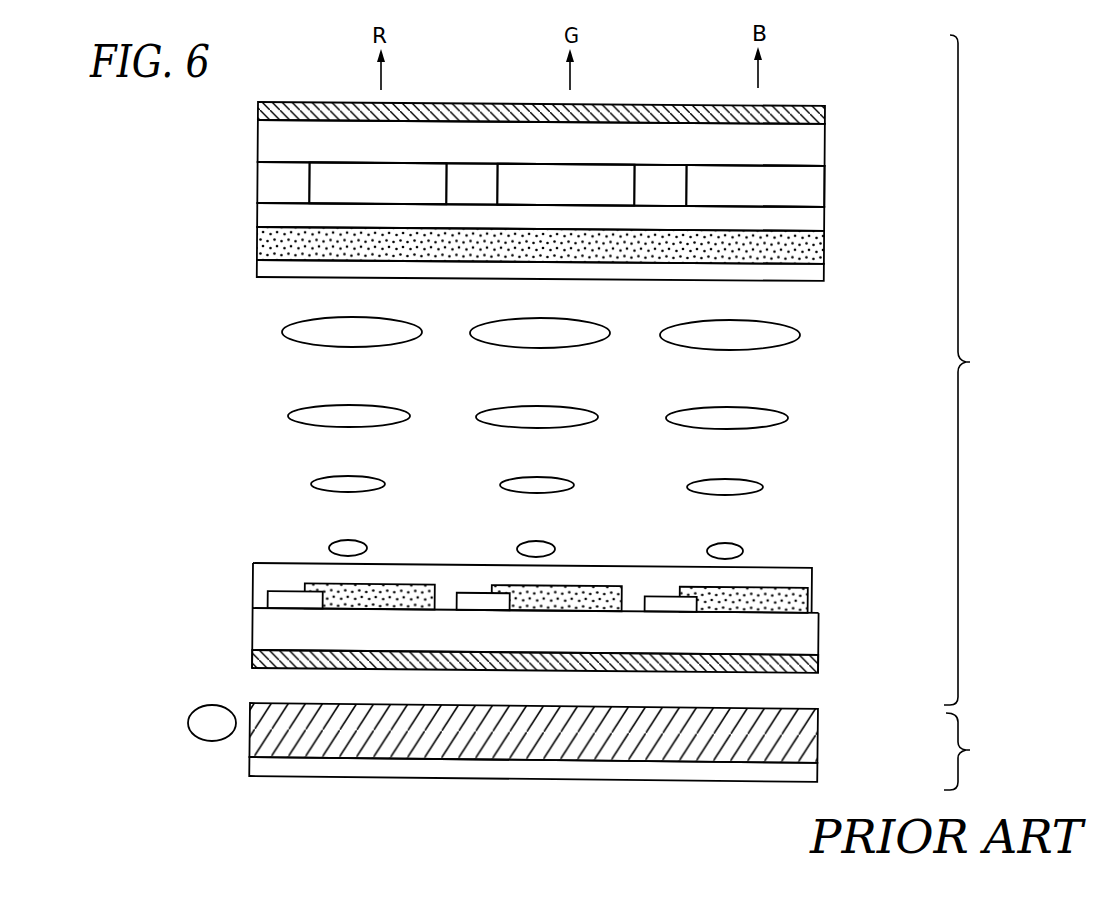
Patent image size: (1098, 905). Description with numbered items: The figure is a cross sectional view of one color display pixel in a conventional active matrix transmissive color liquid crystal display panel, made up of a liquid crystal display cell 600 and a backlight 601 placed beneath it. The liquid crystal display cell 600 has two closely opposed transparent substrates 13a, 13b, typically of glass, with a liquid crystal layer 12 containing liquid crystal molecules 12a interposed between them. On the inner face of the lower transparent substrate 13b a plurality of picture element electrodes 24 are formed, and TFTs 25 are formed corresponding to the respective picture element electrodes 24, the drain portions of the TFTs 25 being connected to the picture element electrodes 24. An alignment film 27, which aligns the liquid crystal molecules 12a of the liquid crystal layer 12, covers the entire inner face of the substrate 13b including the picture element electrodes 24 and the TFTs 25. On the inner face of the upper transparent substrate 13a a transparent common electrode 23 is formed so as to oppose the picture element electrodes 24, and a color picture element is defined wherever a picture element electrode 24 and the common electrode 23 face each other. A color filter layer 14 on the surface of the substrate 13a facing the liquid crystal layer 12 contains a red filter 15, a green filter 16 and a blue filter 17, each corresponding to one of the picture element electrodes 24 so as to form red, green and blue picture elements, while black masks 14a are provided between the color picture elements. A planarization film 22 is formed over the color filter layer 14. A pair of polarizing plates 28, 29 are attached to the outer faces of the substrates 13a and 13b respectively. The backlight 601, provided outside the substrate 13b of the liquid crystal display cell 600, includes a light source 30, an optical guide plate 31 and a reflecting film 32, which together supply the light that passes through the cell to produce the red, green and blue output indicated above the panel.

The liquid crystal layer 12 is at (816, 422).
The liquid crystal molecules 12a is at (800, 335).
The transparent substrate 13a is at (825, 140).
The transparent substrate 13b is at (820, 637).
The color filter layer 14 is at (825, 185).
The black masks 14a is at (291, 163).
The red filter 15 is at (377, 184).
The green filter 16 is at (565, 186).
The blue filter 17 is at (755, 187).
The planarization film 22 is at (825, 222).
The transparent common electrode 23 is at (825, 251).
The picture element electrodes 24 is at (812, 592).
The TFTs 25 is at (682, 612).
The alignment film 27 is at (825, 272).
The polarizing plate 28 is at (825, 103).
The polarizing plate 29 is at (819, 668).
The light source 30 is at (212, 741).
The optical guide plate 31 is at (818, 733).
The reflecting film 32 is at (818, 768).
The liquid crystal display cell 600 is at (983, 370).
The backlight 601 is at (979, 751).